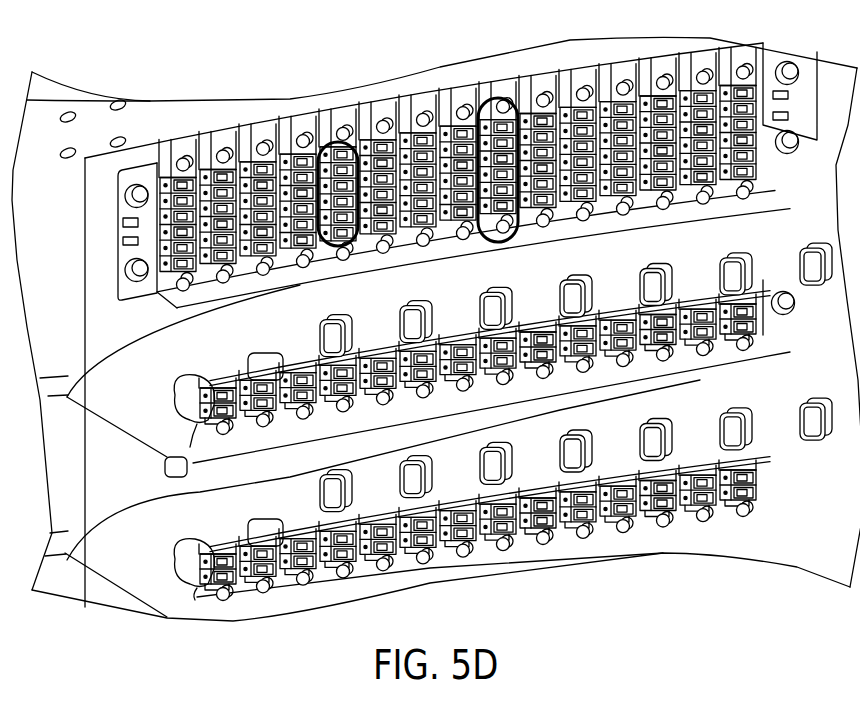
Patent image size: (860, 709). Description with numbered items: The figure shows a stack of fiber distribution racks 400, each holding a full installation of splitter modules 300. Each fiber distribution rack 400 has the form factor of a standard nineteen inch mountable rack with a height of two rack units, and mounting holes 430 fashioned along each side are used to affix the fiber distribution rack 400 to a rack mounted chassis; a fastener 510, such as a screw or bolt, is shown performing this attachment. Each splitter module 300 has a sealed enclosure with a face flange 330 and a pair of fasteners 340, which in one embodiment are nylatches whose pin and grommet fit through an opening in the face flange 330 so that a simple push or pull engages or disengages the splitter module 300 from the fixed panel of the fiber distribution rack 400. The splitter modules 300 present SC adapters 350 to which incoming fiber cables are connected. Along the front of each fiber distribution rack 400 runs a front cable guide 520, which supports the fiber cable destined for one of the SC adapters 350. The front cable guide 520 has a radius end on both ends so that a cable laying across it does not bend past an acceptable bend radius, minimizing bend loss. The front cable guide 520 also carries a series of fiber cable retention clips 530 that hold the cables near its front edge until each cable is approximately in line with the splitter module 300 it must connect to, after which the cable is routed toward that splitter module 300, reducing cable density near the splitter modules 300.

The splitter module 300 is at (500, 98).
The face flange 330 is at (410, 121).
The fasteners 340 is at (221, 152).
The SC adapters 350 is at (330, 142).
The fiber distribution rack 400 is at (128, 177).
The mounting holes 430 is at (122, 243).
The fastener 510 is at (128, 200).
The front cable guide 520 is at (80, 360).
The fiber cable retention clips 530 is at (666, 286).